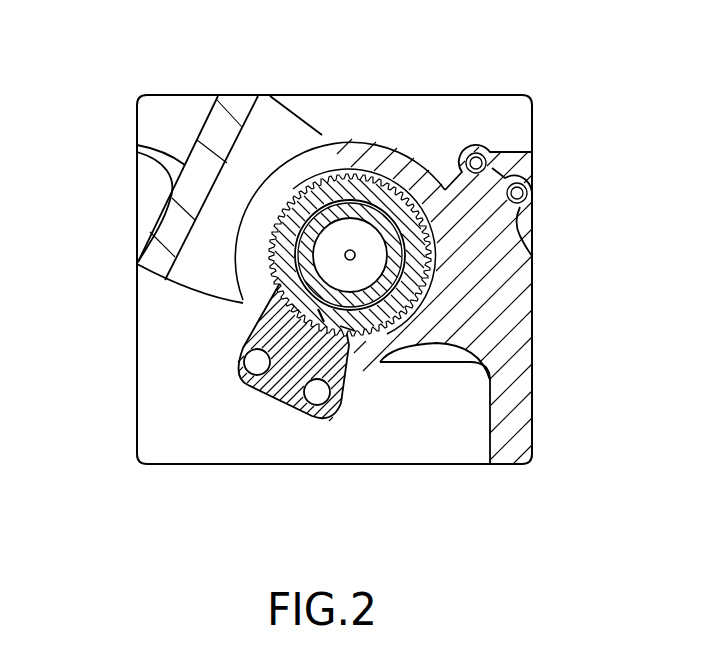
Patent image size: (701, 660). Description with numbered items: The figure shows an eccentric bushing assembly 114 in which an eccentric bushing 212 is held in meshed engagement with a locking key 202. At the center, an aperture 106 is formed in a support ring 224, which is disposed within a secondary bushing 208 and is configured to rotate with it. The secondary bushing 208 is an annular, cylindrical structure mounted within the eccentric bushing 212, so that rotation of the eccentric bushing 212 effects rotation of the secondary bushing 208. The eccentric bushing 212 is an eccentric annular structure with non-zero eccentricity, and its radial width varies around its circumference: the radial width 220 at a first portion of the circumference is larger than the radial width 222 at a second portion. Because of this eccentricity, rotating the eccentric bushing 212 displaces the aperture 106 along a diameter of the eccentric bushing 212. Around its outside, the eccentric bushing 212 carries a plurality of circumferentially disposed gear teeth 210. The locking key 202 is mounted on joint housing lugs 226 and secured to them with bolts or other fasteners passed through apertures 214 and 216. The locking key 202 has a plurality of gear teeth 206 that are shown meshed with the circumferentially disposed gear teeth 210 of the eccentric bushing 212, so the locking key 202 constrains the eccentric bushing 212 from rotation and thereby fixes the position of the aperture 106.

The eccentric bushing assembly 114 is at (80, 142).
The aperture 106 is at (355, 255).
The locking key 202 is at (300, 397).
The plurality of gear teeth 206 is at (252, 325).
The secondary bushing 208 is at (365, 210).
The plurality of circumferentially disposed gear teeth 210 is at (346, 326).
The eccentric bushing 212 is at (403, 203).
The aperture 214 is at (255, 362).
The aperture 216 is at (317, 405).
The radial width 220 is at (330, 197).
The radial width 222 is at (400, 300).
The support ring 224 is at (375, 270).
The joint housing lugs 226 is at (378, 328).